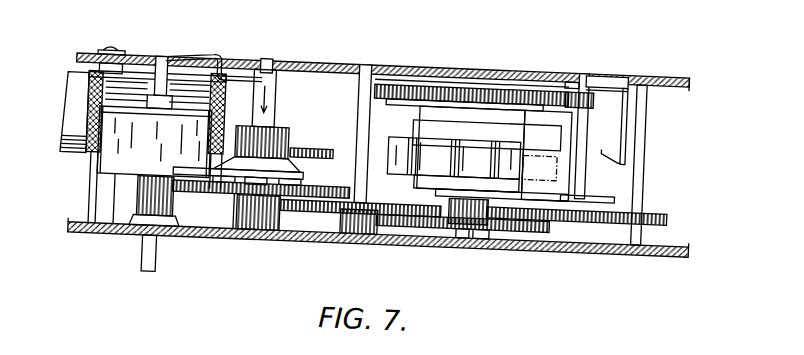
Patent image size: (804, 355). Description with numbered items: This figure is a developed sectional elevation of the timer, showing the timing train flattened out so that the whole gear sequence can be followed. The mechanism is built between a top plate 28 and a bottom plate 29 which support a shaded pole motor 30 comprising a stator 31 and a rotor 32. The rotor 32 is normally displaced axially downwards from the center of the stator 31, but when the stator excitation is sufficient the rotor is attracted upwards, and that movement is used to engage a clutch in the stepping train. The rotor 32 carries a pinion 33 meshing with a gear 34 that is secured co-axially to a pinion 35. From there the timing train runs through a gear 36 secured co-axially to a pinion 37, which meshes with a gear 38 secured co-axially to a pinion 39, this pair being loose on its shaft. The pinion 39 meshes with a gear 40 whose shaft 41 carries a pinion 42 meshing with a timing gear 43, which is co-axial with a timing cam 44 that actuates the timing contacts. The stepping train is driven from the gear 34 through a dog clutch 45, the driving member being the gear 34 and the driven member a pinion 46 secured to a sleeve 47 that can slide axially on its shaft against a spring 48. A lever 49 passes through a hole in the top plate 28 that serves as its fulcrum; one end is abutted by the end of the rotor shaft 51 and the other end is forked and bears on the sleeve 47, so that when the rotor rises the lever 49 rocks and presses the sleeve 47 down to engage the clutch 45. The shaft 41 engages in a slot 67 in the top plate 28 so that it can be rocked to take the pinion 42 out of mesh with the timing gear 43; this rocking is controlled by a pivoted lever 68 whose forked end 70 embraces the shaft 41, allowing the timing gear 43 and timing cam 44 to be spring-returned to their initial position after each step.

The top plate 28 is at (305, 54).
The bottom plate 29 is at (615, 233).
The shaded pole motor 30 is at (65, 108).
The stator 31 is at (84, 75).
The rotor 32 is at (171, 170).
The pinion 33 is at (178, 194).
The gear 34 is at (239, 186).
The pinion 35 is at (276, 193).
The gear 36 is at (331, 202).
The pinion 37 is at (352, 225).
The gear 38 is at (429, 213).
The pinion 39 is at (451, 218).
The gear 40 is at (570, 201).
The shaft 41 is at (585, 56).
The pinion 42 is at (594, 82).
The timing gear 43 is at (504, 72).
The timing cam 44 is at (407, 133).
The dog clutch 45 is at (308, 175).
The pinion 46 is at (287, 119).
The sleeve 47 is at (277, 75).
The spring 48 is at (296, 149).
The lever 49 is at (193, 48).
The rotor shaft 51 is at (145, 53).
The slot 67 is at (596, 54).
The lever 68 is at (631, 116).
The forked end 70 is at (614, 67).